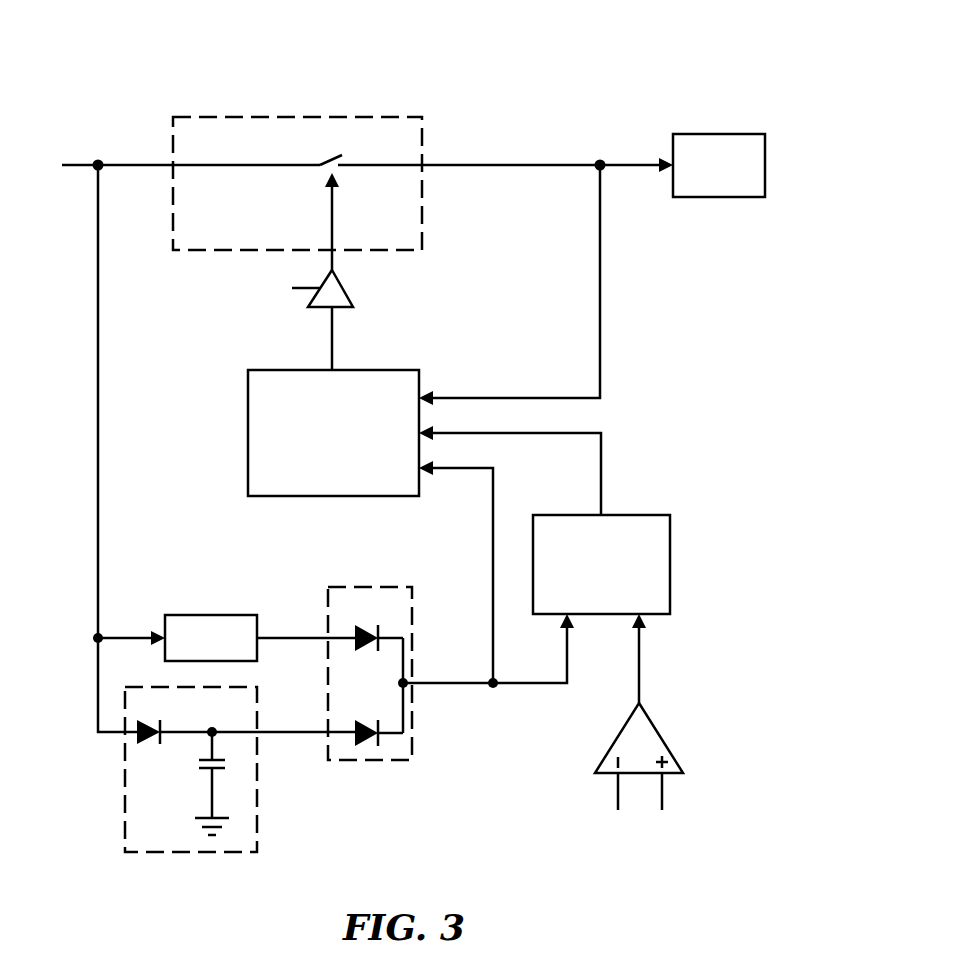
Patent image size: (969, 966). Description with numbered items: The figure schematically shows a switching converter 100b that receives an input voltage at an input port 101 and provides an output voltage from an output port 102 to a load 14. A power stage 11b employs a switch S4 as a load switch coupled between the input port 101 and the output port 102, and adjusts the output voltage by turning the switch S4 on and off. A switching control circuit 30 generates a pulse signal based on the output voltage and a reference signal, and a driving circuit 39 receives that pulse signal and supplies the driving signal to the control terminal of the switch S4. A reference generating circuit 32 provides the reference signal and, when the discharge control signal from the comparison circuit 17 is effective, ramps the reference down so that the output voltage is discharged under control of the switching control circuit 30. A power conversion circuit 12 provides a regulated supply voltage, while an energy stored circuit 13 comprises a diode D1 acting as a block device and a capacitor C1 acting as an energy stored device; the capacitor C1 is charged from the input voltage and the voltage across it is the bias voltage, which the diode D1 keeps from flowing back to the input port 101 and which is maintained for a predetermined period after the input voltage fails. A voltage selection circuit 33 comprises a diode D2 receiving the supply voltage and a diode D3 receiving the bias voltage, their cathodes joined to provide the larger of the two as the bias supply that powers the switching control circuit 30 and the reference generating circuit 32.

The switching converter 100b is at (693, 57).
The input port 101 is at (115, 154).
The output port 102 is at (590, 151).
The power stage 11b is at (420, 117).
The switch S4 is at (332, 148).
The driving circuit 39 is at (344, 294).
The switching control circuit 30 is at (248, 413).
The load 14 is at (693, 197).
The reference generating circuit 32 is at (670, 515).
The comparison circuit 17 is at (665, 746).
The power conversion circuit 12 is at (230, 615).
The energy stored circuit 13 is at (257, 795).
The diode D1 is at (153, 720).
The capacitor C1 is at (198, 781).
The voltage selection circuit 33 is at (372, 760).
The diode D2 is at (378, 625).
The diode D3 is at (378, 721).